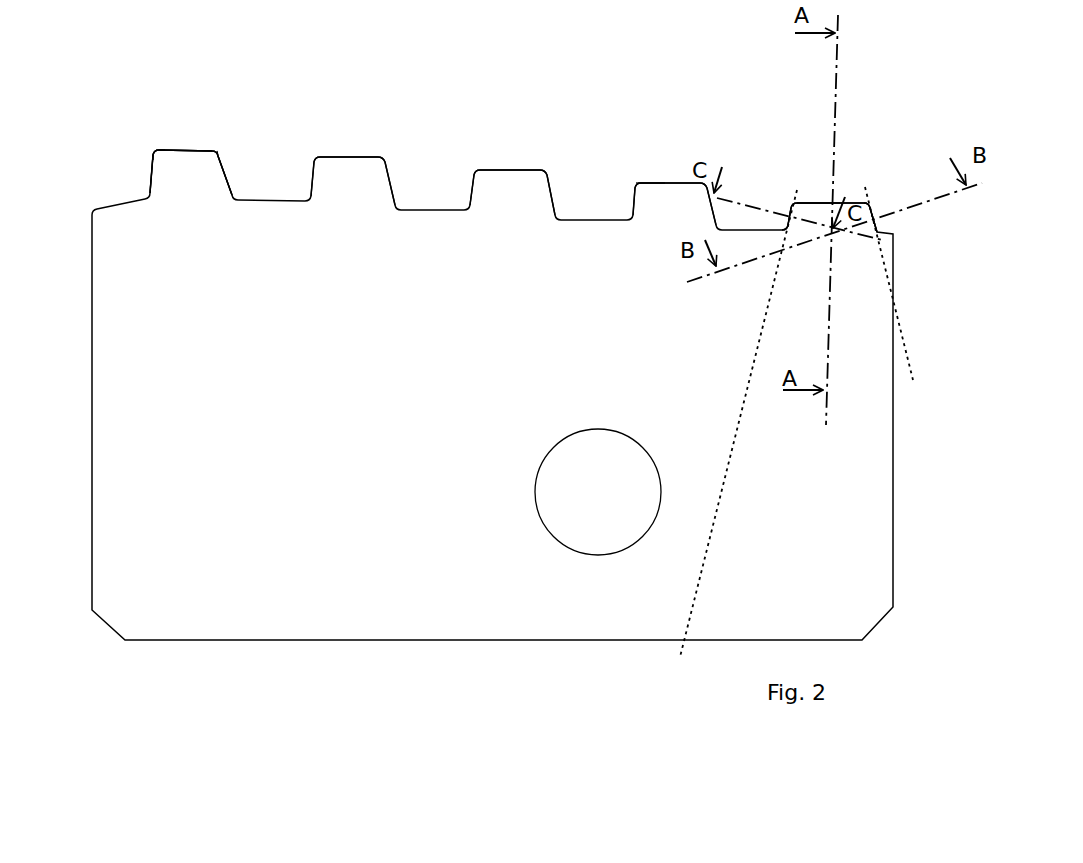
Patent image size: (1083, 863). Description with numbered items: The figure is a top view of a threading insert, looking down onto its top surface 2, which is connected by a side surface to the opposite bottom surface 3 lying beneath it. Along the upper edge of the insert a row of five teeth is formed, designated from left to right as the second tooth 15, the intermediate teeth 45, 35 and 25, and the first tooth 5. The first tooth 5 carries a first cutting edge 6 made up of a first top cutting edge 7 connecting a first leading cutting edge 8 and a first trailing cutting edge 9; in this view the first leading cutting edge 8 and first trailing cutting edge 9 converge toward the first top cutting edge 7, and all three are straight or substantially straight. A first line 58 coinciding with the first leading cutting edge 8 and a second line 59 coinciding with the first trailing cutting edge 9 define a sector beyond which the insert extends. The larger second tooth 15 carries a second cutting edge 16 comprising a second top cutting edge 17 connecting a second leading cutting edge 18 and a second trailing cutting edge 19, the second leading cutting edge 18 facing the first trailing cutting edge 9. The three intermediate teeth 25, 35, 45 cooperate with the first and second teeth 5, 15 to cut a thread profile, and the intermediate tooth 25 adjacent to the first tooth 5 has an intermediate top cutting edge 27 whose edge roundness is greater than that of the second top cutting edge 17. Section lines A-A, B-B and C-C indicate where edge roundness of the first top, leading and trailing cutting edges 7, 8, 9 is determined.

The top surface 2 is at (365, 570).
The bottom surface 3 is at (345, 5).
The first tooth 5 is at (860, 163).
The first cutting edge 6 is at (870, 205).
The first top cutting edge 7 is at (817, 203).
The first leading cutting edge 8 is at (873, 222).
The first trailing cutting edge 9 is at (790, 213).
The second tooth 15 is at (215, 107).
The second cutting edge 16 is at (155, 148).
The second top cutting edge 17 is at (185, 150).
The second leading cutting edge 18 is at (233, 173).
The second trailing cutting edge 19 is at (148, 172).
The intermediate tooth 25 is at (665, 151).
The intermediate top cutting edge 27 is at (655, 183).
The intermediate tooth 35 is at (512, 138).
The intermediate tooth 45 is at (355, 128).
The first line 58 is at (902, 310).
The second line 59 is at (729, 444).